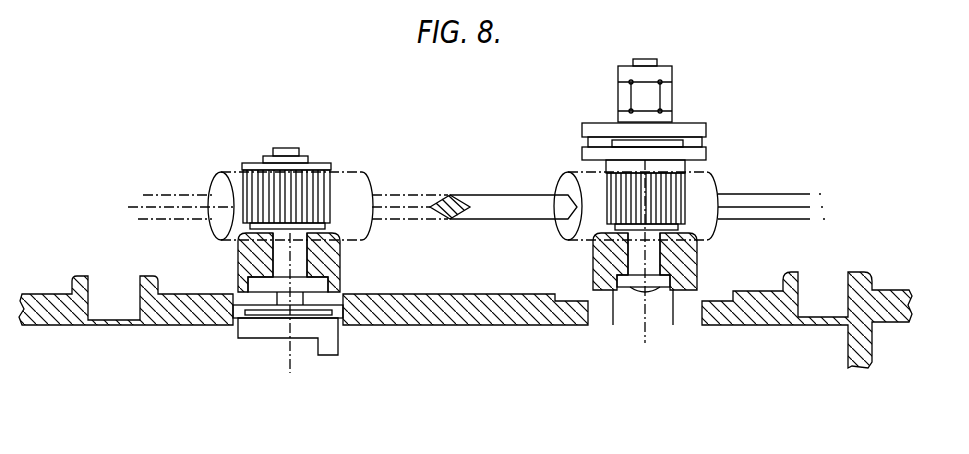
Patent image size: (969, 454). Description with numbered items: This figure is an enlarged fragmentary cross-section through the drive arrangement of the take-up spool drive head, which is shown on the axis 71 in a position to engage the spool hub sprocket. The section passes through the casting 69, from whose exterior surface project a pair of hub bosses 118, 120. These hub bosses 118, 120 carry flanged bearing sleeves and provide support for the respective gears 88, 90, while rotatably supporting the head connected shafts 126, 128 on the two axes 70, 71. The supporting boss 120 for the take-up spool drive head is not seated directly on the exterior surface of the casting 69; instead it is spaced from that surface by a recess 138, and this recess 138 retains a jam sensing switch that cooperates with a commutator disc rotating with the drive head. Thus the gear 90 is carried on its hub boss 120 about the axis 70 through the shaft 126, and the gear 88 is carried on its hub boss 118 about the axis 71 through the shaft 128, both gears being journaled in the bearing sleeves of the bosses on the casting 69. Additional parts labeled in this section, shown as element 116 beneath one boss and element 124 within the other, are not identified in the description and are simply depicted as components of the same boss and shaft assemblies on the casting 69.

The casting 69 is at (458, 310).
The axis 70 is at (290, 362).
The axis 71 is at (647, 332).
The gear 88 is at (662, 203).
The gear 90 is at (300, 196).
The bracket 116 is at (338, 349).
The hub boss 118 is at (600, 262).
The hub boss 120 is at (333, 262).
The right bolt 124 is at (653, 261).
The head connected shaft 126 is at (278, 262).
The head connected shaft 128 is at (283, 312).
The recess 138 is at (233, 325).